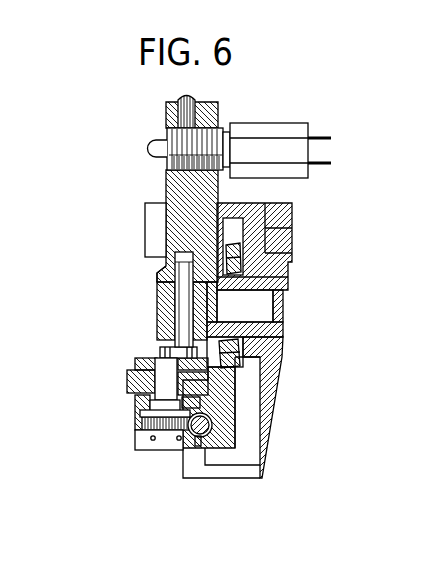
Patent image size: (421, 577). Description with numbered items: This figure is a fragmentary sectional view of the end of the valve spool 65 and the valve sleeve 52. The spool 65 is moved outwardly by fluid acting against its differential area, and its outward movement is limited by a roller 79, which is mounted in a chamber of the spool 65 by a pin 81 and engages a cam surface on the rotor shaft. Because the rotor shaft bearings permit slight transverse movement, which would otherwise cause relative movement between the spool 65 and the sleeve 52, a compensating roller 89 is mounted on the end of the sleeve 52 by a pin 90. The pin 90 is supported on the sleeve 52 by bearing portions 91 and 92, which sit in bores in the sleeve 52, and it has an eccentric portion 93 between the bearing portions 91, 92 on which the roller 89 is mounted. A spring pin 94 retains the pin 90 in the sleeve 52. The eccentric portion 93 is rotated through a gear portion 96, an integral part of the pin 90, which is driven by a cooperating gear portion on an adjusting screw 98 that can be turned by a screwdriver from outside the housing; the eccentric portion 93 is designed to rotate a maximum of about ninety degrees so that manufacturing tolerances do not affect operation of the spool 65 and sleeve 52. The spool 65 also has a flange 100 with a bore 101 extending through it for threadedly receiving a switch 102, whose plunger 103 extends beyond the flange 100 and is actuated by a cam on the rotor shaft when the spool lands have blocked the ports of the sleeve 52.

The flange 100 is at (166, 182).
The bore 101 is at (167, 134).
The switch 102 is at (260, 126).
The plunger 103 is at (150, 150).
The spool 65 is at (156, 272).
The roller 79 is at (157, 299).
The pin 81 is at (175, 309).
The bearing portion 91 is at (135, 361).
The sleeve 52 is at (128, 371).
The roller 89 is at (155, 386).
The eccentric portion 93 is at (178, 388).
The bearing portion 92 is at (150, 404).
The gear portion 96 is at (136, 431).
The spring pin 94 is at (179, 441).
The pin 90 is at (191, 412).
The adjusting screw 98 is at (197, 447).